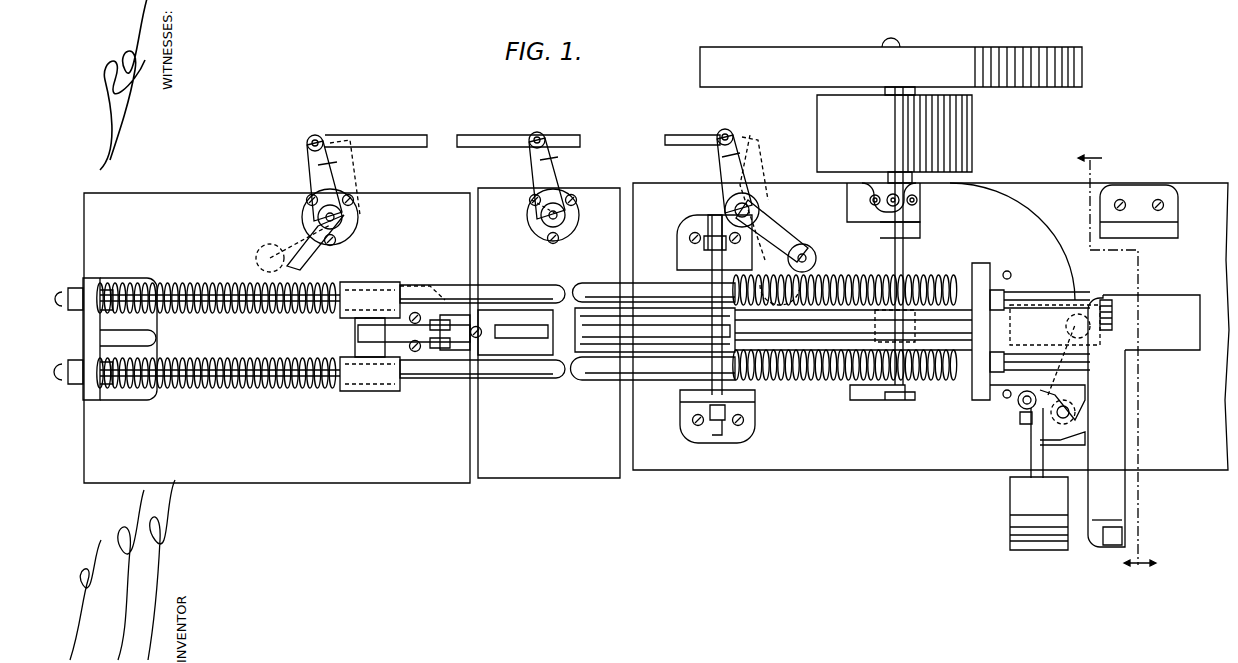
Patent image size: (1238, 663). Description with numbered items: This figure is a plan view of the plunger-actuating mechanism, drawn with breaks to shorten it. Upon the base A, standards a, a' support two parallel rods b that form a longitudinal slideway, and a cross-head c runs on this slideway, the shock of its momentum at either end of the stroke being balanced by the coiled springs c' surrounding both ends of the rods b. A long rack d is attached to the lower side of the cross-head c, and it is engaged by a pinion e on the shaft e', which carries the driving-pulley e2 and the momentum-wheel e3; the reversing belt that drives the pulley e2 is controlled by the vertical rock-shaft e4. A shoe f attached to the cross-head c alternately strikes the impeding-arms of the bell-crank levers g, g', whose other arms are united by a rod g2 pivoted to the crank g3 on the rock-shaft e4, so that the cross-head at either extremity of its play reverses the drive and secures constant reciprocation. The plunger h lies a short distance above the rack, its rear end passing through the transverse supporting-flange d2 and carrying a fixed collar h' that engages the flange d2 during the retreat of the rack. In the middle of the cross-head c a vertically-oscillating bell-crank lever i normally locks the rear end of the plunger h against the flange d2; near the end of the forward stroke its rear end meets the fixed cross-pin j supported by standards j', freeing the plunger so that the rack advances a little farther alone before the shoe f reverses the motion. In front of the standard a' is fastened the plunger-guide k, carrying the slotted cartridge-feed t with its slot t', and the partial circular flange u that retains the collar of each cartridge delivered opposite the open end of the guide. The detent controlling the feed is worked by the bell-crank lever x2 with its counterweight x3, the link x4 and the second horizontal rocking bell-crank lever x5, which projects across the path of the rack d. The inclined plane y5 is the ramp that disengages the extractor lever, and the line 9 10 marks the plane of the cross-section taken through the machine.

The base A is at (656, 333).
The standard a is at (105, 339).
The standard a' is at (1031, 331).
The parallel rods b is at (170, 282).
The cross-head c is at (370, 338).
The coiled springs c' is at (527, 335).
The rack d is at (340, 330).
The transverse supporting-flange d2 is at (497, 366).
The pinion e is at (882, 243).
The shaft e' is at (892, 220).
The driving-pulley e2 is at (894, 135).
The momentum-wheel e3 is at (891, 62).
The vertical rock-shaft e4 is at (535, 230).
The shoe f is at (420, 280).
The bell-crank lever g is at (341, 203).
The bell-crank lever g' is at (766, 217).
The rod g2 is at (599, 138).
The crank g3 is at (552, 162).
The plunger h is at (604, 331).
The fixed collar h' is at (567, 293).
The vertically-oscillating bell-crank lever i is at (418, 335).
The fixed cross-pin j is at (726, 305).
The standards j' is at (714, 329).
The plunger-guide k is at (1055, 325).
The slotted cartridge-feed t is at (1144, 421).
The slot t' is at (1131, 531).
The partial circular flange u is at (1112, 315).
The bell-crank lever x2 is at (1030, 455).
The counterweight x3 is at (1039, 513).
The link x4 is at (1010, 408).
The second horizontal rocking bell-crank lever x5 is at (1060, 388).
The inclined plane y5 is at (1155, 238).
The section line 9 is at (1108, 351).
The section line 10 is at (1140, 574).